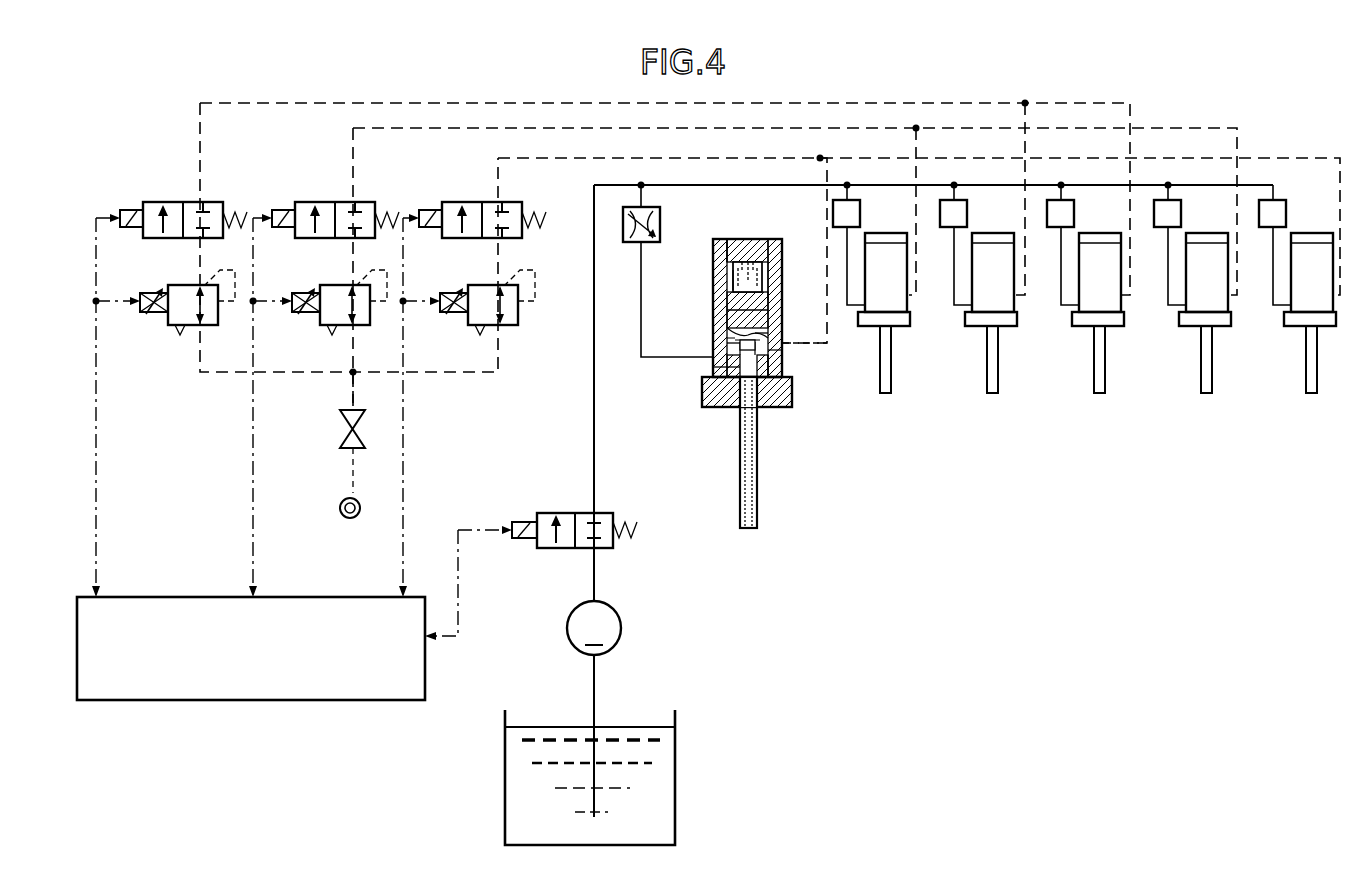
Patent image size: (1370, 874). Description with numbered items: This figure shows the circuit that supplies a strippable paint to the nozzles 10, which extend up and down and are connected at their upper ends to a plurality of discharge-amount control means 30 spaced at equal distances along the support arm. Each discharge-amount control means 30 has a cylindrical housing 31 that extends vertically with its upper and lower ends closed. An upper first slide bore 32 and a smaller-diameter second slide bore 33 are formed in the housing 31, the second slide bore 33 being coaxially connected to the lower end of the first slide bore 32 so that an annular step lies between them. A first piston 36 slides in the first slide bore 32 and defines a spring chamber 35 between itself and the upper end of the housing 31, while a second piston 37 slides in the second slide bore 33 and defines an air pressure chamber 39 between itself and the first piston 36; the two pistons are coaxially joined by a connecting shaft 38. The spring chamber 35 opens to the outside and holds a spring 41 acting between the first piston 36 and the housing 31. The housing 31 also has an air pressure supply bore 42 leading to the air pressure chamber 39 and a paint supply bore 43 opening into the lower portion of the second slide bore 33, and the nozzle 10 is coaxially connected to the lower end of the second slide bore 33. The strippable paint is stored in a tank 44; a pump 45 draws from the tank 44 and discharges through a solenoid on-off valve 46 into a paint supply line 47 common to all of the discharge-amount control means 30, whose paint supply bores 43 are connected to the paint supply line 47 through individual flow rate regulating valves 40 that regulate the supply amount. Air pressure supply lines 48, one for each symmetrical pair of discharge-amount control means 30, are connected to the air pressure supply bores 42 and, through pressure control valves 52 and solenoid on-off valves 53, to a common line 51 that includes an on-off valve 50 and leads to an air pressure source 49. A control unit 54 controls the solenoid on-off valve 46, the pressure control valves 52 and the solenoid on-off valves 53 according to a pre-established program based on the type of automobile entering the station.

The nozzle 10 is at (1343, 380).
The discharge-amount control means 30 is at (716, 412).
The cylindrical housing 31 is at (703, 387).
The first slide bore 32 is at (738, 248).
The second slide bore 33 is at (732, 328).
The spring chamber 35 is at (748, 262).
The first piston 36 is at (770, 298).
The second piston 37 is at (785, 370).
The connecting shaft 38 is at (740, 345).
The air pressure chamber 39 is at (760, 333).
The flow rate regulating valve 40 is at (625, 232).
The spring 41 is at (733, 277).
The air pressure supply bore 42 is at (787, 350).
The paint supply bore 43 is at (713, 367).
The tank 44 is at (675, 735).
The pump 45 is at (621, 622).
The solenoid on-off valve 46 is at (565, 513).
The paint supply line 47 is at (594, 292).
The air pressure supply line 48 is at (1258, 158).
The air pressure source 49 is at (340, 508).
The on-off valve 50 is at (335, 438).
The common line 51 is at (350, 392).
The pressure control valve 52 is at (470, 326).
The solenoid on-off valve 53 is at (470, 202).
The control unit 54 is at (238, 658).